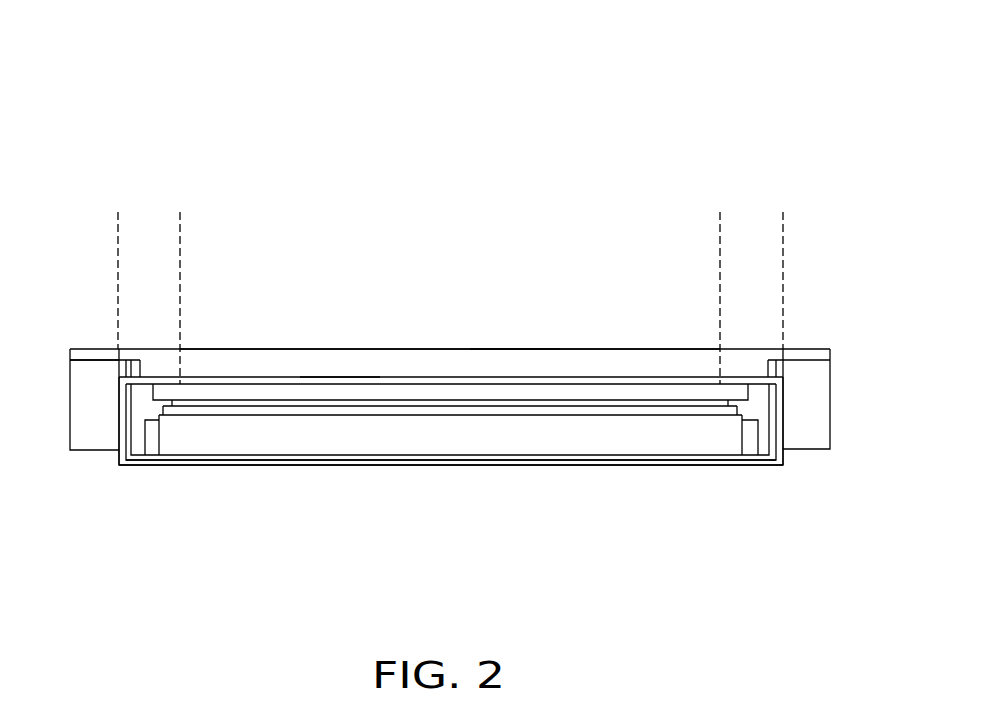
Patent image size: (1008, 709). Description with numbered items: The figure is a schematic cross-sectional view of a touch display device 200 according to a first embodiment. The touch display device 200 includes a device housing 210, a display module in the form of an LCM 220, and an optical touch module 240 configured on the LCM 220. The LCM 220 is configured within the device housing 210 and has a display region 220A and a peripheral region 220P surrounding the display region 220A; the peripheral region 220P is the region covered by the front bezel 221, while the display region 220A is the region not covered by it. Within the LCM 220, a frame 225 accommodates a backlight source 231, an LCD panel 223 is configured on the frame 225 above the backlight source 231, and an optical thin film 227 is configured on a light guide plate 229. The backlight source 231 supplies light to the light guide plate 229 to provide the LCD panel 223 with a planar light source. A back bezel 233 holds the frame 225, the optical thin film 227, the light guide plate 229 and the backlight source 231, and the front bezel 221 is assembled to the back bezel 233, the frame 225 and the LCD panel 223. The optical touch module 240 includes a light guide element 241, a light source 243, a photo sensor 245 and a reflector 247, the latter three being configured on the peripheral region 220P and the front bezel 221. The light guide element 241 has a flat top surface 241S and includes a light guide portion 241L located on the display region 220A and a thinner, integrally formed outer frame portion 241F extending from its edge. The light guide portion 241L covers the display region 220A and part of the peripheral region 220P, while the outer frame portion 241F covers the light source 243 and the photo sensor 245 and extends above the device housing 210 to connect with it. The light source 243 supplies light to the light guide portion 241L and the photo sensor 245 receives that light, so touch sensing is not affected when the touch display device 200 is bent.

The touch display device 200 is at (829, 571).
The device housing 210 is at (97, 435).
The LCM 220 is at (492, 536).
The display region 220A is at (720, 214).
The peripheral region 220P is at (180, 214).
The front bezel 221 is at (122, 450).
The LCD panel 223 is at (352, 392).
The frame 225 is at (139, 445).
The optical thin film 227 is at (413, 408).
The light guide plate 229 is at (289, 435).
The backlight source 231 is at (152, 445).
The back bezel 233 is at (483, 458).
The optical touch module 240 is at (633, 12).
The light guide element 241 is at (407, 349).
The outer frame portion 241F is at (92, 356).
The light guide portion 241L is at (340, 372).
The top surface 241S is at (512, 349).
The light source 243 is at (138, 358).
The photo sensor 245 is at (127, 358).
The reflector 247 is at (768, 368).